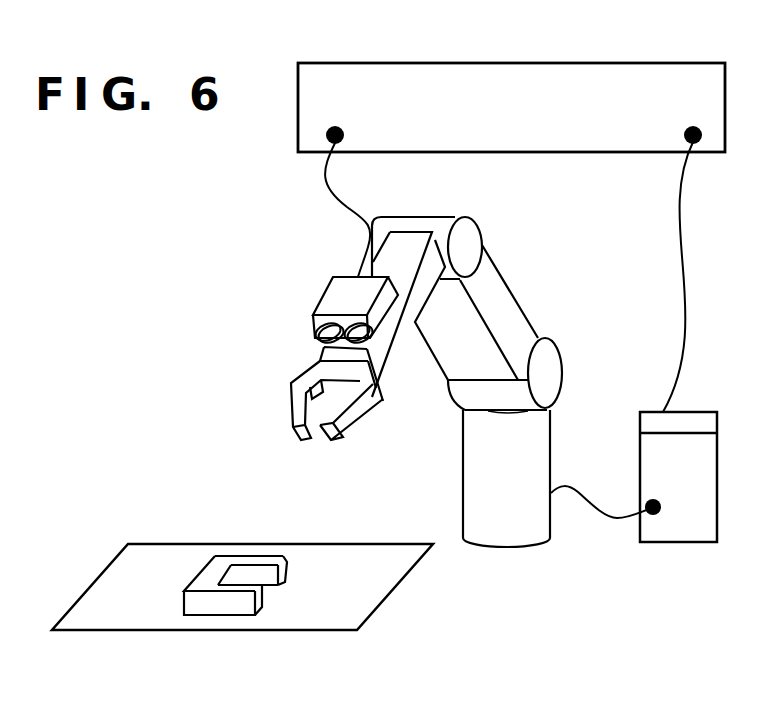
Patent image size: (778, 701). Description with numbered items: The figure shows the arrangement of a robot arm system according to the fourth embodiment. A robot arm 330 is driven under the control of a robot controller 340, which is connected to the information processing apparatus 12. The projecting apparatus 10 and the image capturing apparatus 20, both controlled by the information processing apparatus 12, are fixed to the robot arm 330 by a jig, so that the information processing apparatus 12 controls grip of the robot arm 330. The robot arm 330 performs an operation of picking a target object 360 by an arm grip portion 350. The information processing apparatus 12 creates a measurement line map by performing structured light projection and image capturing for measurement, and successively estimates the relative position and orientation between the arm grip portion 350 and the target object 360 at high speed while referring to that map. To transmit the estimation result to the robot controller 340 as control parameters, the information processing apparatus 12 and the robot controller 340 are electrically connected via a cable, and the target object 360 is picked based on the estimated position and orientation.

The information processing apparatus 12 is at (511, 62).
The projecting apparatus 10 is at (315, 328).
The image capturing apparatus 20 is at (316, 338).
The robot arm 330 is at (507, 548).
The robot controller 340 is at (680, 544).
The arm grip portion 350 is at (290, 417).
The target object 360 is at (227, 560).